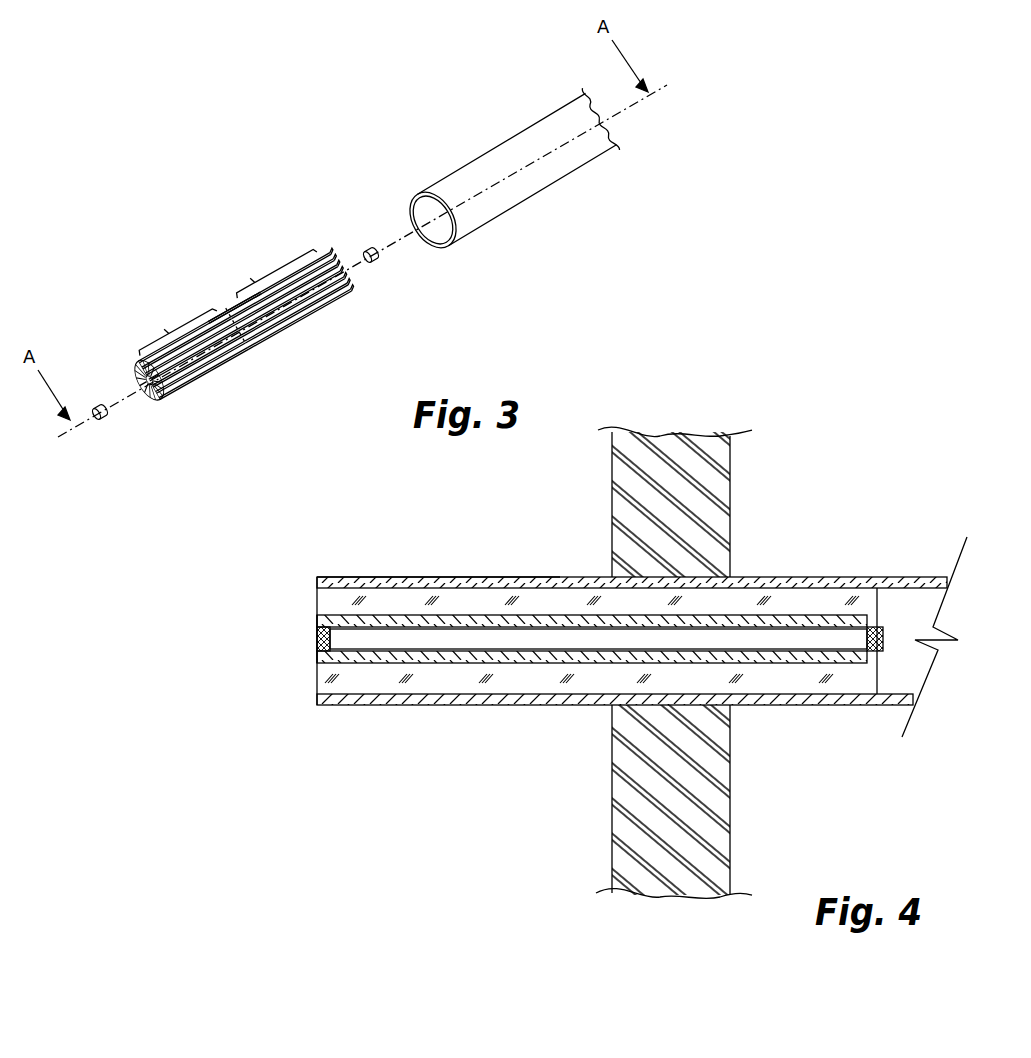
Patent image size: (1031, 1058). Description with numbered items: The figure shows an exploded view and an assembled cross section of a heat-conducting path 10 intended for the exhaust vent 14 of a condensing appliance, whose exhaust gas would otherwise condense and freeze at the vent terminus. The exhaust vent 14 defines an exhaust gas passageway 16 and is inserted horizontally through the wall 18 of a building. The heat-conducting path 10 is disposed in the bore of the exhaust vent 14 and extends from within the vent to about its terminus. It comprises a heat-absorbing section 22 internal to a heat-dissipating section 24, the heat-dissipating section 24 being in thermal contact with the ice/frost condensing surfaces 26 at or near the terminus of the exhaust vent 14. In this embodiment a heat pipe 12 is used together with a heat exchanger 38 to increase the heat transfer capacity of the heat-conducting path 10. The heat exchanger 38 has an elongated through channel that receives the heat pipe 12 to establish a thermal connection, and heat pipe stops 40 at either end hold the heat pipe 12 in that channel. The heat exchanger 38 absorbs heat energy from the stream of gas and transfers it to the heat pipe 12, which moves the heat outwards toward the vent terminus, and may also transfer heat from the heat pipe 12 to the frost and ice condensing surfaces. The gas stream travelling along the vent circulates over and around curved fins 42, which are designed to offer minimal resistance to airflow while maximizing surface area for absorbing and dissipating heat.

In FIG. 3, the heat-conducting path 10 is at (290, 362).
In FIG. 3, the heat pipe 12 is at (144, 394).
In FIG. 4, the heat pipe 12 is at (470, 643).
In FIG. 3, the exhaust vent 14 is at (493, 150).
In FIG. 4, the exhaust vent 14 is at (540, 705).
In FIG. 3, the exhaust gas passageway 16 is at (410, 217).
In FIG. 4, the exhaust gas passageway 16 is at (910, 673).
In FIG. 4, the wall 18 is at (731, 512).
In FIG. 3, the heat-absorbing section 22 is at (287, 291).
In FIG. 3, the heat-dissipating section 24 is at (190, 347).
In FIG. 4, the ice/frost condensing surfaces 26 is at (292, 588).
In FIG. 3, the heat exchanger 38 is at (233, 312).
In FIG. 3, the heat pipe stops 40 is at (364, 253).
In FIG. 4, the heat pipe stops 40 is at (315, 640).
In FIG. 4, the fins 42 is at (567, 611).